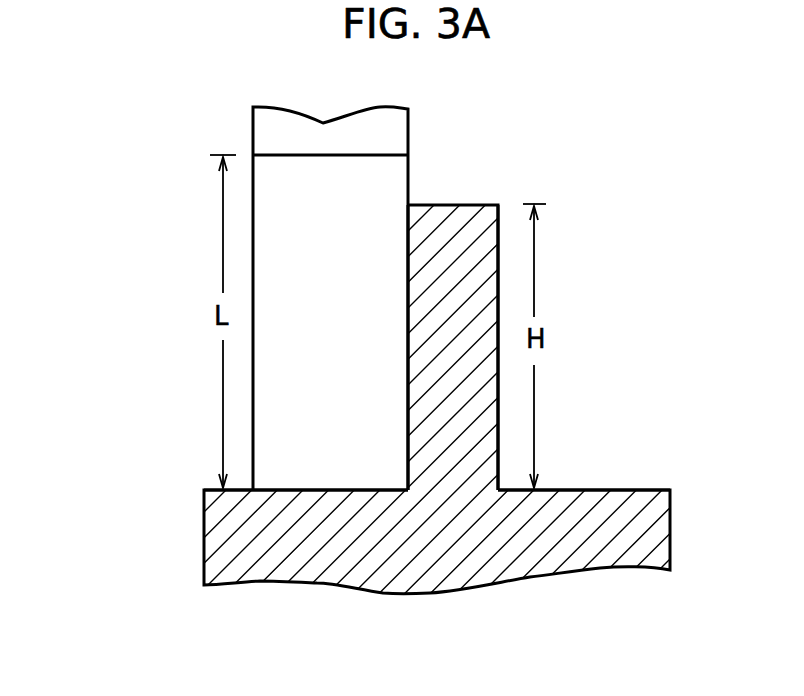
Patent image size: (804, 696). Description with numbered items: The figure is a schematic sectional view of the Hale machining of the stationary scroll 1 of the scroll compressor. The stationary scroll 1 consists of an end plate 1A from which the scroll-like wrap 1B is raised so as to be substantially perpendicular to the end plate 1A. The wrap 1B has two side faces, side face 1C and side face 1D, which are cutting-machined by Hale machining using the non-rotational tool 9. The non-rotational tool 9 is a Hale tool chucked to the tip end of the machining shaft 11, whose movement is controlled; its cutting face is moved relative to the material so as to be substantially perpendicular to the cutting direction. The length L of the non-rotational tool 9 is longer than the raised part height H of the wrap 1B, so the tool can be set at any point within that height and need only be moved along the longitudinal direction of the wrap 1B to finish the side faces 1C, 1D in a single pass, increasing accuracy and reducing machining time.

The stationary scroll 1 is at (327, 588).
The end plate 1A is at (453, 558).
The wrap 1B is at (482, 273).
The side face 1C is at (497, 370).
The side face 1D is at (408, 402).
The non-rotational tool 9 is at (278, 265).
The machining shaft 11 is at (392, 132).